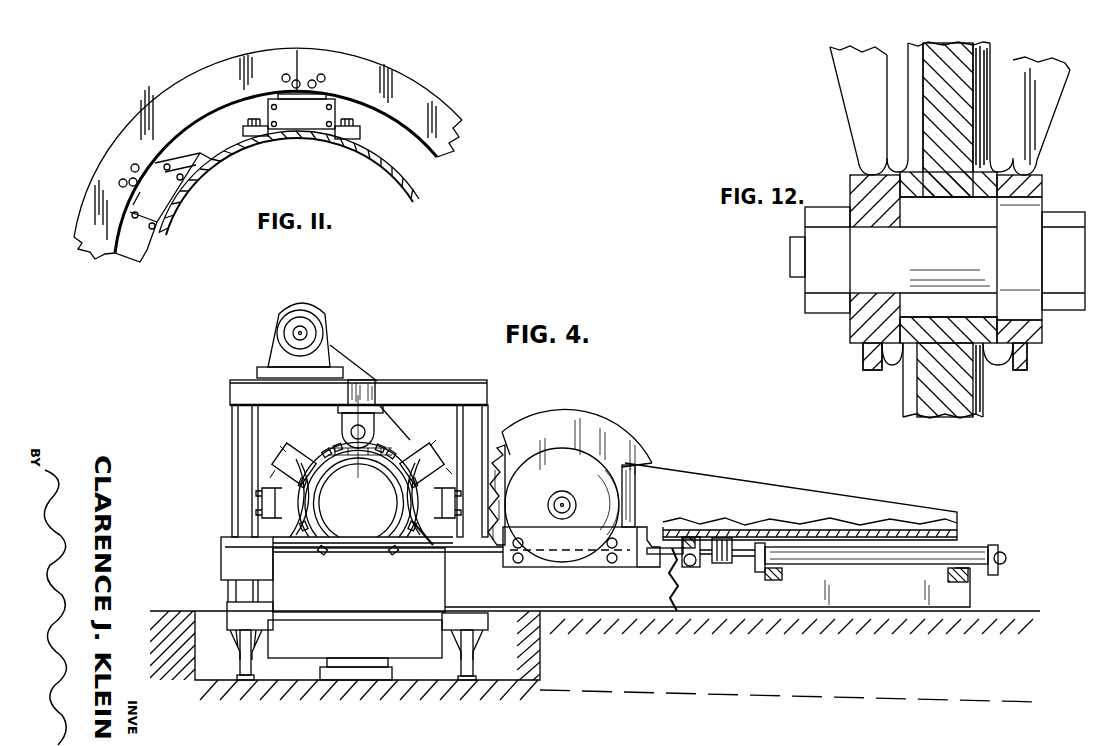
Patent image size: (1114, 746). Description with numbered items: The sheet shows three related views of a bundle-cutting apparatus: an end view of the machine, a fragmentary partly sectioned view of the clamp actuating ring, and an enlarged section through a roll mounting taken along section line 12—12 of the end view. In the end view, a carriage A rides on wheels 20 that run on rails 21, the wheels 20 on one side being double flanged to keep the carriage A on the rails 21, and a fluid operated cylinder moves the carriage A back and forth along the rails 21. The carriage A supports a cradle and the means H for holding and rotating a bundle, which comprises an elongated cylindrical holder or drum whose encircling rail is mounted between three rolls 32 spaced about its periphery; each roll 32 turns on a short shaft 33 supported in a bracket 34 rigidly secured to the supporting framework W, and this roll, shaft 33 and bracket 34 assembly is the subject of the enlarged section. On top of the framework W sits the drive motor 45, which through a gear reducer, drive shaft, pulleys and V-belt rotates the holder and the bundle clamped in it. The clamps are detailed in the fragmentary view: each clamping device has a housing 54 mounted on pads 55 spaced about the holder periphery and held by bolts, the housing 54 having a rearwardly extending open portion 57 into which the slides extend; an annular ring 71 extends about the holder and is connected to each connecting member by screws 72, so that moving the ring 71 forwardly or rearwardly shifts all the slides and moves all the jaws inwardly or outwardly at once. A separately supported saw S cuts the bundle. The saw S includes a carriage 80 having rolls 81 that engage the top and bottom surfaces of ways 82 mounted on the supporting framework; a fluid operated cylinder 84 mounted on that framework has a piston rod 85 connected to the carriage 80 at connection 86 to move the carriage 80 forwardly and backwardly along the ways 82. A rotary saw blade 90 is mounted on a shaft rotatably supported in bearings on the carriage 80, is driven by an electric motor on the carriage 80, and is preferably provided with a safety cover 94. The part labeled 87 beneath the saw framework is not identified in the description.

In FIG. 11, the annular ring 71 is at (410, 87).
In FIG. 11, the screws 72 is at (284, 74).
In FIG. 11, the housing 54 is at (244, 131).
In FIG. 11, the pads 55 is at (244, 140).
In FIG. 11, the rearwardly extending open portion 57 is at (338, 118).
In FIG. 12, the rolls 32 is at (985, 405).
In FIG. 4, the rolls 32 is at (380, 436).
In FIG. 12, the short shaft 33 is at (977, 297).
In FIG. 12, the bracket 34 is at (1043, 134).
In FIG. 4, the drive motor 45 is at (316, 320).
In FIG. 4, the supporting framework W is at (438, 380).
In FIG. 4, the pipe 12 is at (352, 420).
In FIG. 4, the means for holding and rotating a bundle H is at (441, 452).
In FIG. 4, the carriage A is at (212, 581).
In FIG. 4, the wheels 20 is at (240, 664).
In FIG. 4, the rails 21 is at (255, 676).
In FIG. 4, the rotary saw blade 90 is at (498, 442).
In FIG. 4, the rolls 81 is at (574, 460).
In FIG. 4, the safety cover 94 is at (621, 432).
In FIG. 4, the saw S is at (652, 447).
In FIG. 4, the carriage 80 is at (918, 508).
In FIG. 4, the ways 82 is at (660, 556).
In FIG. 4, the connection 86 is at (695, 548).
In FIG. 4, the piston rod 85 is at (740, 562).
In FIG. 4, the fluid operated cylinder 84 is at (855, 564).
In FIG. 4, the base 87 is at (974, 611).